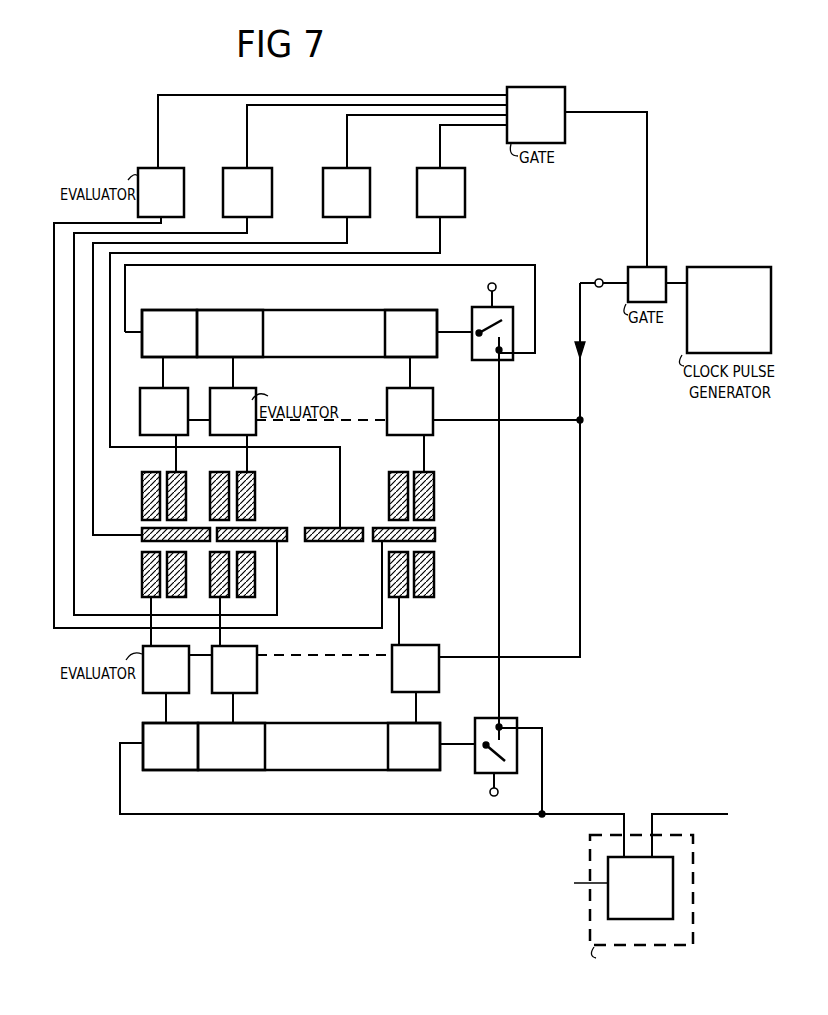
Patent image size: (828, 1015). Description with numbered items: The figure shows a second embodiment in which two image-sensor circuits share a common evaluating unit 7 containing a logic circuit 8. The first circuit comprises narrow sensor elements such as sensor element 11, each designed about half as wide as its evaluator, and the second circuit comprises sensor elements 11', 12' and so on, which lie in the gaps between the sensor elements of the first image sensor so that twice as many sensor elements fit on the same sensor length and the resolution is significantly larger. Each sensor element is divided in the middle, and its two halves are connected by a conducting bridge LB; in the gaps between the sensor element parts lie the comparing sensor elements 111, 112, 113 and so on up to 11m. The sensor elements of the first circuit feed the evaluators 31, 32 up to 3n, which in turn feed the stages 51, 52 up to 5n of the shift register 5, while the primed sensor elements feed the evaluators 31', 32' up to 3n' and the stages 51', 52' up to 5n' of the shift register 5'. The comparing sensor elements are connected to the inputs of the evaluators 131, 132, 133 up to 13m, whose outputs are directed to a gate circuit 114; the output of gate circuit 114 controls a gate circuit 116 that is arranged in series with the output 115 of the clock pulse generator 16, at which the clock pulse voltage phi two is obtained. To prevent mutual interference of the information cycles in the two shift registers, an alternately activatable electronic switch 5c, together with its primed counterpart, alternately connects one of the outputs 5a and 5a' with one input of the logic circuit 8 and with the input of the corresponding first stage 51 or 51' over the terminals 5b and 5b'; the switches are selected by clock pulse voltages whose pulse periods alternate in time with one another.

The evaluator 131 is at (161, 192).
The evaluator 132 is at (247, 192).
The evaluator 133 is at (346, 192).
The evaluator 13m is at (441, 192).
The gate circuit 114 is at (536, 115).
The output of the clock pulse generator 115 is at (598, 268).
The gate circuit 116 is at (647, 284).
The clock pulse generator 16 is at (729, 310).
The shift register 5' is at (289, 319).
The first stage of the shift register 51' is at (169, 333).
The stage of the shift register 52' is at (230, 333).
The stage of the shift register 5n' is at (411, 333).
The output of the shift register 5a' is at (504, 354).
The shift register terminal 5b' is at (496, 276).
The evaluator 31' is at (164, 411).
The evaluator 32' is at (233, 411).
The evaluator 3n' is at (410, 411).
The sensor element 11 is at (265, 535).
The sensor element 11' is at (194, 529).
The sensor element 12' is at (266, 534).
The comparing sensor element 11m is at (446, 535).
The comparing sensor element 111 is at (143, 531).
The conducting bridge LB is at (256, 527).
The comparing sensor element 112 is at (283, 542).
The comparing sensor element 113 is at (349, 542).
The evaluator 31 is at (166, 669).
The evaluator 32 is at (234, 669).
The evaluator 3n is at (415, 668).
The shift register 5 is at (291, 733).
The first stage of the shift register 51 is at (170, 746).
The stage of the shift register 52 is at (231, 746).
The stage of the shift register 5n is at (414, 746).
The output of the shift register 5a is at (534, 769).
The shift register terminal 5b is at (324, 833).
The electronic switch 5c is at (476, 772).
The evaluating unit 7 is at (693, 868).
The logic circuit 8 is at (601, 888).